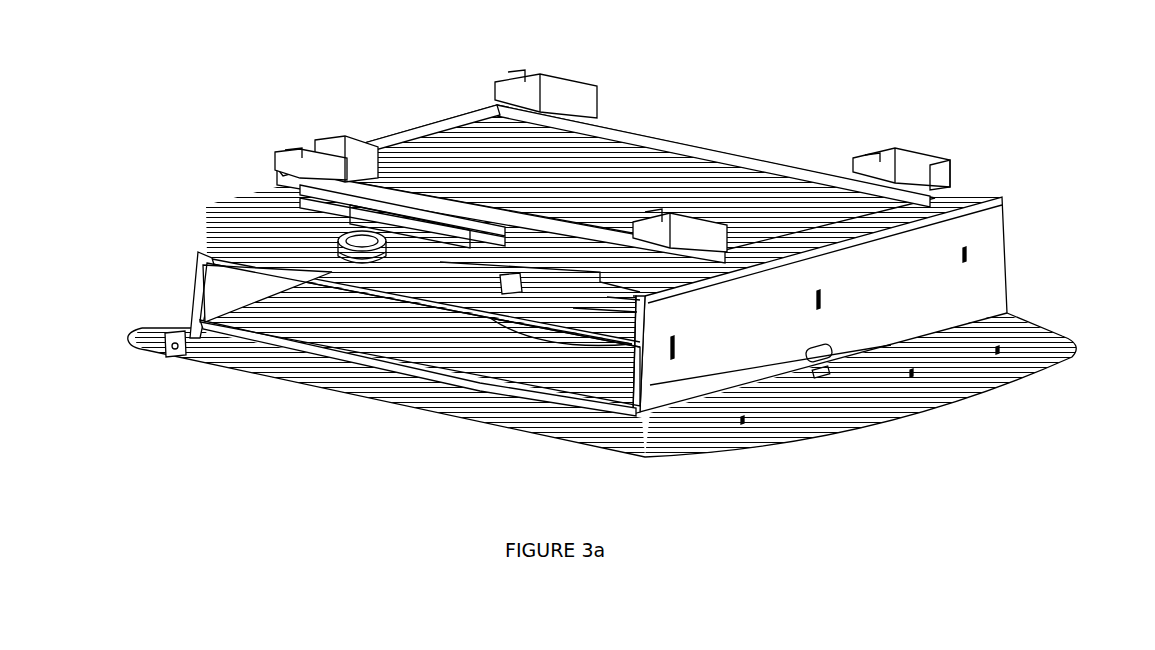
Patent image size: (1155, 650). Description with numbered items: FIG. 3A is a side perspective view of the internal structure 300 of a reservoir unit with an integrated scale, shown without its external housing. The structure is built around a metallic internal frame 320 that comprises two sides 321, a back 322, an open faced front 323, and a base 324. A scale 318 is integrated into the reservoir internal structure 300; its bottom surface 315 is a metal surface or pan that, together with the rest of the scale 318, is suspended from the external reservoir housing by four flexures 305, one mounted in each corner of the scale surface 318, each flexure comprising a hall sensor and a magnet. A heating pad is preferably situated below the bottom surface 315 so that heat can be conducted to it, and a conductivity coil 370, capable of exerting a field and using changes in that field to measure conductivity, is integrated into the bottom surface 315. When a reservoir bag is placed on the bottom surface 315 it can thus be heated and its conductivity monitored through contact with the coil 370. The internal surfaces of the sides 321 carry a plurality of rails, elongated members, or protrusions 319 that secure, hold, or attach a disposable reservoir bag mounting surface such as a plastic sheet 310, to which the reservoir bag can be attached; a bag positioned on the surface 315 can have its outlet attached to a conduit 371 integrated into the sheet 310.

The internal structure 300 is at (1001, 262).
The flexures 305 is at (363, 170).
The reservoir bag mounting surface 310 is at (450, 285).
The bottom surface 315 is at (512, 362).
The scale 318 is at (430, 150).
The rails 319 is at (207, 263).
The internal frame 320 is at (982, 300).
The sides 321 is at (960, 303).
The back 322 is at (943, 165).
The open faced front 323 is at (468, 367).
The base 324 is at (980, 360).
The conductivity coil 370 is at (500, 322).
The conduit 371 is at (347, 244).